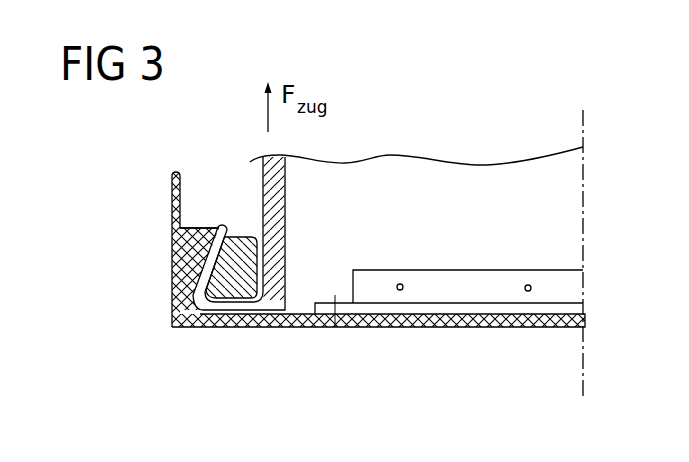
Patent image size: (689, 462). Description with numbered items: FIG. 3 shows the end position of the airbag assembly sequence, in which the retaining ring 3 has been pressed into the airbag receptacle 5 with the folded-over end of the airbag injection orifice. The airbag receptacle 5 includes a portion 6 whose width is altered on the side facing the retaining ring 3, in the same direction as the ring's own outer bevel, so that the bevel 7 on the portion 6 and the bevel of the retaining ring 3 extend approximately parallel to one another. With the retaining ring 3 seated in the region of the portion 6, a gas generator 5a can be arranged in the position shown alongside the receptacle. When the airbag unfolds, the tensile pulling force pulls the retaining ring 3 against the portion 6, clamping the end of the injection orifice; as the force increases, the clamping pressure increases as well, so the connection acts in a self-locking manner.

The retaining ring 3 is at (225, 290).
The airbag receptacle 5 is at (172, 202).
The gas generator 5a is at (562, 285).
The portion 6 is at (176, 284).
The bevel 7 is at (202, 262).